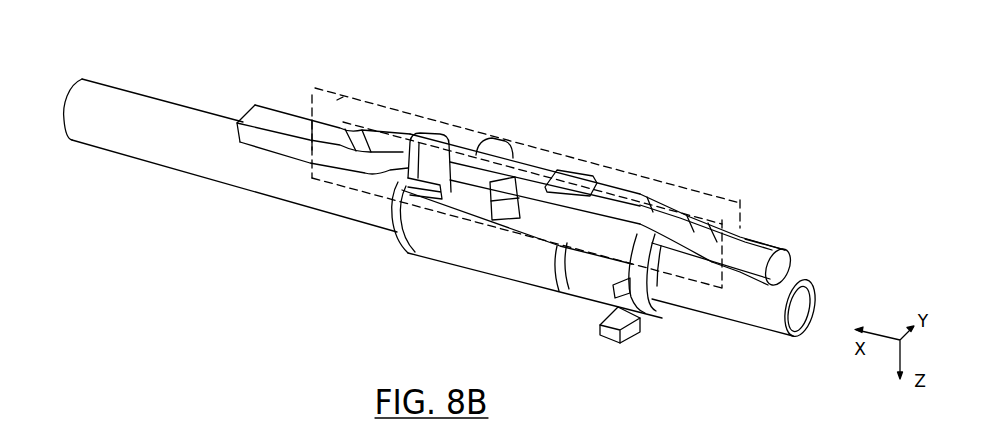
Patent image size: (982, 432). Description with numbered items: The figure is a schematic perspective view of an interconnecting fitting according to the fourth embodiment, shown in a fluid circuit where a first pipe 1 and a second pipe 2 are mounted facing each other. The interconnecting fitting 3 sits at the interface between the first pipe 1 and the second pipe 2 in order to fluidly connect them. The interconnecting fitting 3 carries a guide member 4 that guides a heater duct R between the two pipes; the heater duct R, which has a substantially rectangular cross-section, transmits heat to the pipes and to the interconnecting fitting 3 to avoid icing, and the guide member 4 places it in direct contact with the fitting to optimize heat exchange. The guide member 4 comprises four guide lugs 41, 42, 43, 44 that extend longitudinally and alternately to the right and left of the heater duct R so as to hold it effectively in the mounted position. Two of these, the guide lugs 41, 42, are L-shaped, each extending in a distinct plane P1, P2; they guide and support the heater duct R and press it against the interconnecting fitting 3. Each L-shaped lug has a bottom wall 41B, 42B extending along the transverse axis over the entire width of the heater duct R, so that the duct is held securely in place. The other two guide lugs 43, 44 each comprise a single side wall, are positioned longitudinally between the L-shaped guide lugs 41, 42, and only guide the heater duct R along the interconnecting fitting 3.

The first pipe 1 is at (202, 145).
The second pipe 2 is at (722, 306).
The interconnecting fitting 3 is at (485, 281).
The guide member 4 is at (381, 50).
The guide lug 41 is at (606, 166).
The bottom wall 41B is at (563, 170).
The guide lug 42 is at (397, 186).
The bottom wall 42B is at (447, 140).
The guide lug 43 is at (493, 138).
The guide lug 44 is at (510, 178).
The heater duct R is at (772, 248).
The plane P1 is at (318, 125).
The plane P2 is at (334, 100).